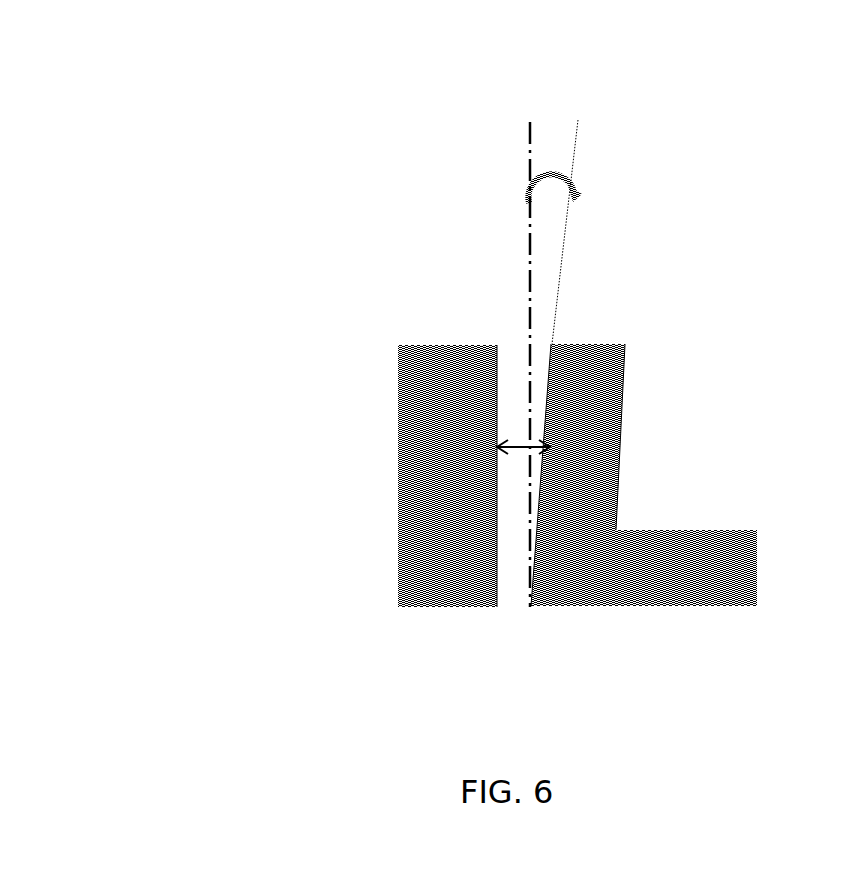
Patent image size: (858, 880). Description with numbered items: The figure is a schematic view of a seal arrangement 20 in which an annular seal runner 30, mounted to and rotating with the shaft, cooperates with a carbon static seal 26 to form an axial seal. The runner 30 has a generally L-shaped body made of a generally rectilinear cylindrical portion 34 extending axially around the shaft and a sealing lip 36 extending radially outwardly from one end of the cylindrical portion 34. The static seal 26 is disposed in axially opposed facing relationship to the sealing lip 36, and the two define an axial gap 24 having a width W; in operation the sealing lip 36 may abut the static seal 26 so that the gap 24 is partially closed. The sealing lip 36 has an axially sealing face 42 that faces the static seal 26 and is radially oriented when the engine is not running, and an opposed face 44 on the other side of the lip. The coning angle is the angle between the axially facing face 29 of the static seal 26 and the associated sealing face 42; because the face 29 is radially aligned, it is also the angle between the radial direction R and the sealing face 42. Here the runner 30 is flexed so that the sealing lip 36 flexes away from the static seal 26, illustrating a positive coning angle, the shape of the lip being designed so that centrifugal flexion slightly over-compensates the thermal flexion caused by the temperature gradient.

The seal arrangement 20 is at (206, 170).
The axial gap 24 is at (512, 569).
The static seal 26 is at (435, 475).
The axially facing face 29 is at (497, 413).
The seal runner 30 is at (663, 310).
The cylindrical portion 34 is at (662, 555).
The sealing lip 36 is at (578, 472).
The sealing face 42 is at (550, 382).
The opposed face 44 is at (622, 392).